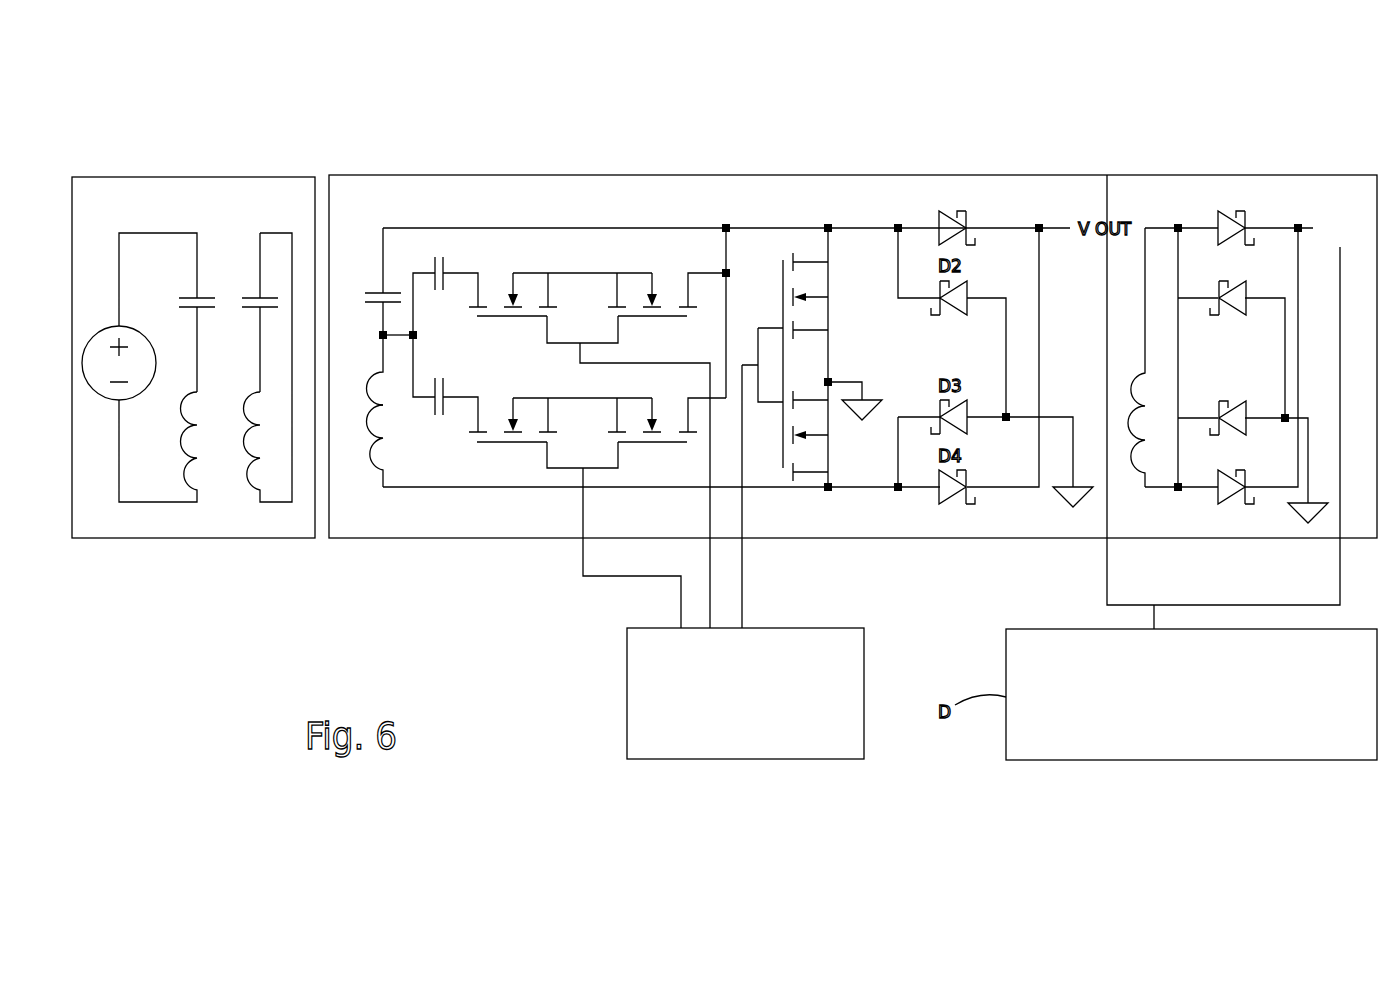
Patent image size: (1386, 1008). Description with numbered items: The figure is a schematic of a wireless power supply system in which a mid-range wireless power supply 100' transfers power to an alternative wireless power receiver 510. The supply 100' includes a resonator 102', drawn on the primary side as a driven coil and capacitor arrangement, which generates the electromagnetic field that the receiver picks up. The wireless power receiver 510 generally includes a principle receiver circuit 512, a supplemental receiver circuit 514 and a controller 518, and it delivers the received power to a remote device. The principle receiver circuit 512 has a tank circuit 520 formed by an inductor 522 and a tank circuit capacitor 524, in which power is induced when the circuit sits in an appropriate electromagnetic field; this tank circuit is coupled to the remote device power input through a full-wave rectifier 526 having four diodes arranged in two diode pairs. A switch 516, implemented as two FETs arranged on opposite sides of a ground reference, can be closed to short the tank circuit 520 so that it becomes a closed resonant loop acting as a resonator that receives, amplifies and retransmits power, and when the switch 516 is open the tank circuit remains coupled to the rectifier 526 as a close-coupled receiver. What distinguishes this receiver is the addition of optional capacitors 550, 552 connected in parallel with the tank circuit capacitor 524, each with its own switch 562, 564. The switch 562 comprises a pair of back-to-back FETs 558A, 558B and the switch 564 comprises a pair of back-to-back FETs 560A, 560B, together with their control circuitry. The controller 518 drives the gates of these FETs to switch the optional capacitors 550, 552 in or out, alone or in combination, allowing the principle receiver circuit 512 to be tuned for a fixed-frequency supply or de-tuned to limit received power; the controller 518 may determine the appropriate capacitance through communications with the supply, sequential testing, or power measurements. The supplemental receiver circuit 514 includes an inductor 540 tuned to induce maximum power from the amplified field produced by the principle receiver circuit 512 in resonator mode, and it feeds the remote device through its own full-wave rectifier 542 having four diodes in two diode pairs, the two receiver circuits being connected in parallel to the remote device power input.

The mid-range wireless power supply 100' is at (193, 360).
The resonator 102' is at (241, 437).
The wireless power receiver 510 is at (626, 115).
The principle receiver circuit 512 is at (539, 520).
The supplemental receiver circuit 514 is at (1267, 204).
The switch 516 is at (768, 311).
The controller 518 is at (627, 695).
The tank circuit 520 is at (366, 493).
The inductor 522 is at (367, 419).
The tank circuit capacitor 524 is at (394, 291).
The full-wave rectifier 526 is at (981, 196).
The inductor 540 is at (1138, 390).
The full-wave rectifier 542 is at (1199, 201).
The optional capacitor 550 is at (446, 265).
The optional capacitor 552 is at (447, 407).
The FET 558A is at (523, 268).
The FET 558B is at (689, 262).
The FET 560A is at (509, 449).
The FET 560B is at (664, 447).
The switch 562 is at (598, 405).
The switch 564 is at (574, 514).